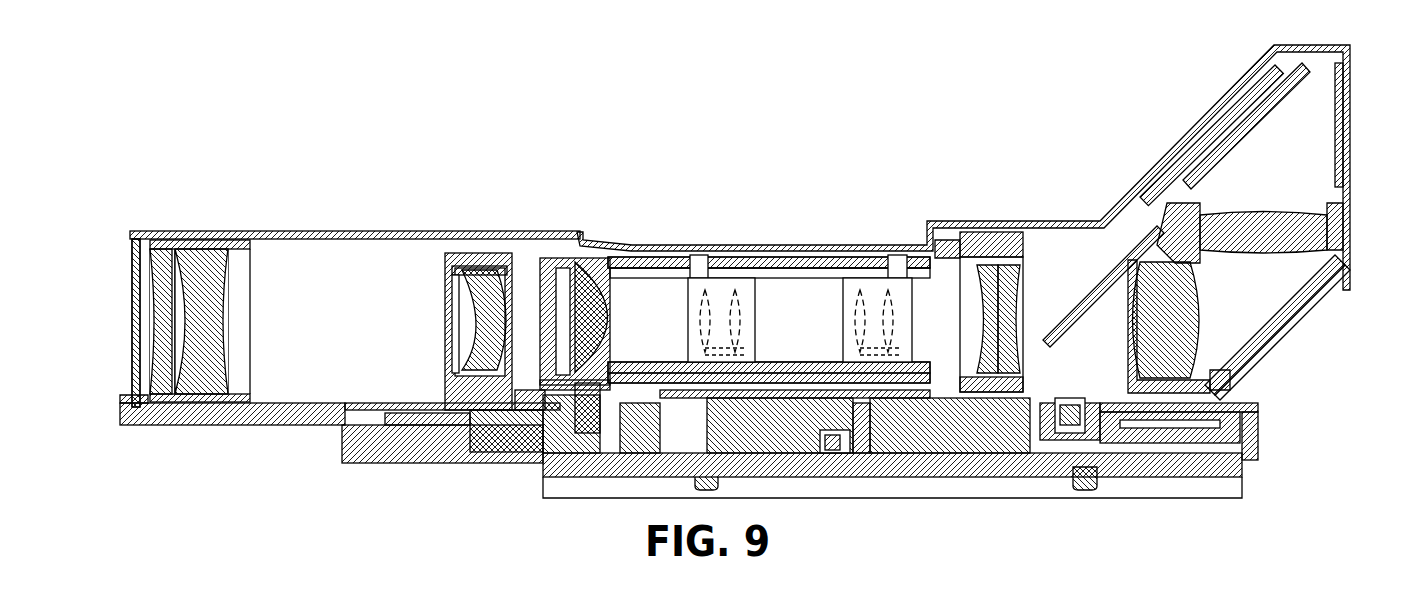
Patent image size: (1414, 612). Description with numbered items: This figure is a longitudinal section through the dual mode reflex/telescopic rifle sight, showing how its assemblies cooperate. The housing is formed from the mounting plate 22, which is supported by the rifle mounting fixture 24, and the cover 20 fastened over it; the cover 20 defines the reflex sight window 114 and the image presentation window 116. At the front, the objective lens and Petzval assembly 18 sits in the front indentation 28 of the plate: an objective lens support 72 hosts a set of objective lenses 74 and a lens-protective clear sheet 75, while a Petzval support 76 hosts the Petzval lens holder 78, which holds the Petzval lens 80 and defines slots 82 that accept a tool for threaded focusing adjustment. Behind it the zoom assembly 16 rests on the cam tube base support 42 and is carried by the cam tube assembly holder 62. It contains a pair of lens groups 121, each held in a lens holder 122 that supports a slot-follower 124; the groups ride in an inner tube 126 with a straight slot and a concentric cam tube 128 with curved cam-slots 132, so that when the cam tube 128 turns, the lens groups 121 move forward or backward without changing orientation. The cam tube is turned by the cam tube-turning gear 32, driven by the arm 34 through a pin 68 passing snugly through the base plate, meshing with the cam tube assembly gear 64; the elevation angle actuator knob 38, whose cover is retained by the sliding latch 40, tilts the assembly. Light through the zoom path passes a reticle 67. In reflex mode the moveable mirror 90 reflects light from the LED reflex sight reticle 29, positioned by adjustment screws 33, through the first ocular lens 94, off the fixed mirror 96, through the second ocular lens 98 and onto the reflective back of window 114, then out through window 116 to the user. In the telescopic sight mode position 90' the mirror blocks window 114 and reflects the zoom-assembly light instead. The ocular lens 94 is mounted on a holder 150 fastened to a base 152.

The zoom assembly 16 is at (853, 252).
The objective lens and Petzval assembly 18 is at (335, 398).
The cover 20 is at (752, 240).
The mounting plate 22 is at (225, 426).
The rifle mounting fixture 24 is at (1245, 465).
The front indentation 28 is at (148, 397).
The reflex sight reticle 29 is at (1066, 402).
The cam tube-turning gear 32 is at (800, 393).
The adjustment screws 33 is at (1165, 432).
The arm 34 is at (838, 450).
The elevation angle actuator knob 38 is at (510, 442).
The sliding latch 40 is at (560, 420).
The cam tube base support 42 is at (525, 392).
The cam tube assembly holder 62 is at (985, 240).
The cam tube assembly gear 64 is at (940, 245).
The reticle 67 is at (1030, 315).
The pin 68 is at (860, 425).
The objective lens support 72 is at (255, 262).
The objective lenses 74 is at (170, 262).
The lens-protective clear sheet 75 is at (133, 310).
The Petzval support 76 is at (480, 253).
The Petzval lens holder 78 is at (450, 278).
The Petzval lens 80 is at (480, 340).
The slots 82 is at (452, 322).
The moveable mirror 90 is at (1103, 286).
The telescopic sight mode position 90' is at (1249, 126).
The first ocular lens 94 is at (1200, 335).
The fixed mirror 96 is at (1265, 320).
The second ocular lens 98 is at (1232, 214).
The reflex sight window 114 is at (1200, 120).
The image presentation window 116 is at (1348, 110).
The lens groups 121 is at (695, 340).
The lens holder 122 is at (688, 300).
The slot-follower 124 is at (702, 255).
The inner tube 126 is at (925, 365).
The cam tube 128 is at (640, 257).
The cam-slots 132 is at (785, 272).
The holder 150 is at (1132, 355).
The base 152 is at (1240, 370).